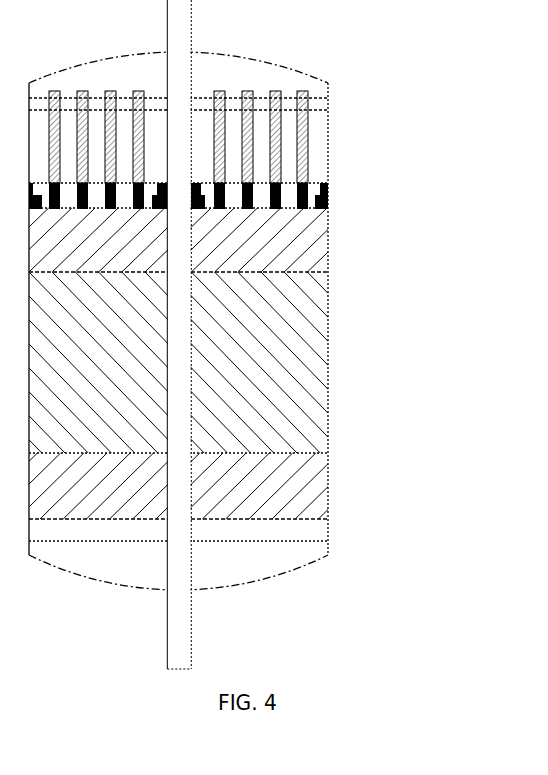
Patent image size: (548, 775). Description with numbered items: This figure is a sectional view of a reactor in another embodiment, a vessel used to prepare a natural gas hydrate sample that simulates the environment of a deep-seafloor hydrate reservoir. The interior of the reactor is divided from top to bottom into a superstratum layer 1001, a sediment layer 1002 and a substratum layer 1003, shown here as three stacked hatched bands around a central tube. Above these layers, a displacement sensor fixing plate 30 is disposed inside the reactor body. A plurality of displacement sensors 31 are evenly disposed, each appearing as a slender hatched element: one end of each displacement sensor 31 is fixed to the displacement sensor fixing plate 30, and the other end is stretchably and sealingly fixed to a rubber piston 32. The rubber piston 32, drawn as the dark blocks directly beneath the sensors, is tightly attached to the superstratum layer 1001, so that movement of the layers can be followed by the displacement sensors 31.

The displacement sensor fixing plate 30 is at (328, 99).
The displacement sensor 31 is at (311, 187).
The rubber piston 32 is at (329, 201).
The superstratum layer 1001 is at (333, 240).
The sediment layer 1002 is at (443, 342).
The substratum layer 1003 is at (333, 487).